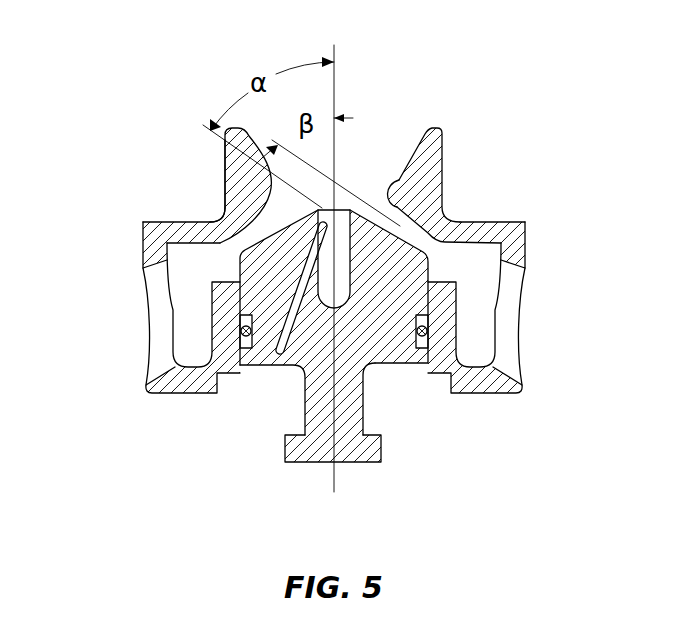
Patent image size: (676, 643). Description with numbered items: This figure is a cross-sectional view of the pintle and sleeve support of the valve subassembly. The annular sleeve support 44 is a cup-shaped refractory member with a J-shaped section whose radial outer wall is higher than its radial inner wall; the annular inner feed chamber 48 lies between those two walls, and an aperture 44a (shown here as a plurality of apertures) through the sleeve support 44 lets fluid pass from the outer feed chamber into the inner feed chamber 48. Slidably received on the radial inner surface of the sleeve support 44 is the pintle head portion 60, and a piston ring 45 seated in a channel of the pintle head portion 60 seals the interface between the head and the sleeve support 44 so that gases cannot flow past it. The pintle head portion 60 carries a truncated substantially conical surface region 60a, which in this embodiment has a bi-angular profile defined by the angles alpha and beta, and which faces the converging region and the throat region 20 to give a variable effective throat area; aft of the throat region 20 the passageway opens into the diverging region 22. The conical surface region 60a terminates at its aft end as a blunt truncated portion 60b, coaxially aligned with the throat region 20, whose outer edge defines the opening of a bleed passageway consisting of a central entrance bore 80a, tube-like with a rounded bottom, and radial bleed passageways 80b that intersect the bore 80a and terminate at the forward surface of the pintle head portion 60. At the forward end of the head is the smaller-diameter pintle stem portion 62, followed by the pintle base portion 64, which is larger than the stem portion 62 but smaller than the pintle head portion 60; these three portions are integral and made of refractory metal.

The throat region 20 is at (393, 183).
The diverging region 22 is at (399, 193).
The annular sleeve support 44 is at (505, 222).
The aperture 44a is at (160, 300).
The piston ring 45 is at (423, 331).
The annular inner feed chamber 48 is at (185, 330).
The pintle head portion 60 is at (385, 363).
The truncated substantially conical surface region 60a is at (224, 211).
The blunt truncated portion 60b is at (263, 185).
The pintle stem portion 62 is at (312, 411).
The pintle base portion 64 is at (381, 462).
The central entrance bore 80a is at (342, 224).
The radial bleed passageways 80b is at (269, 352).